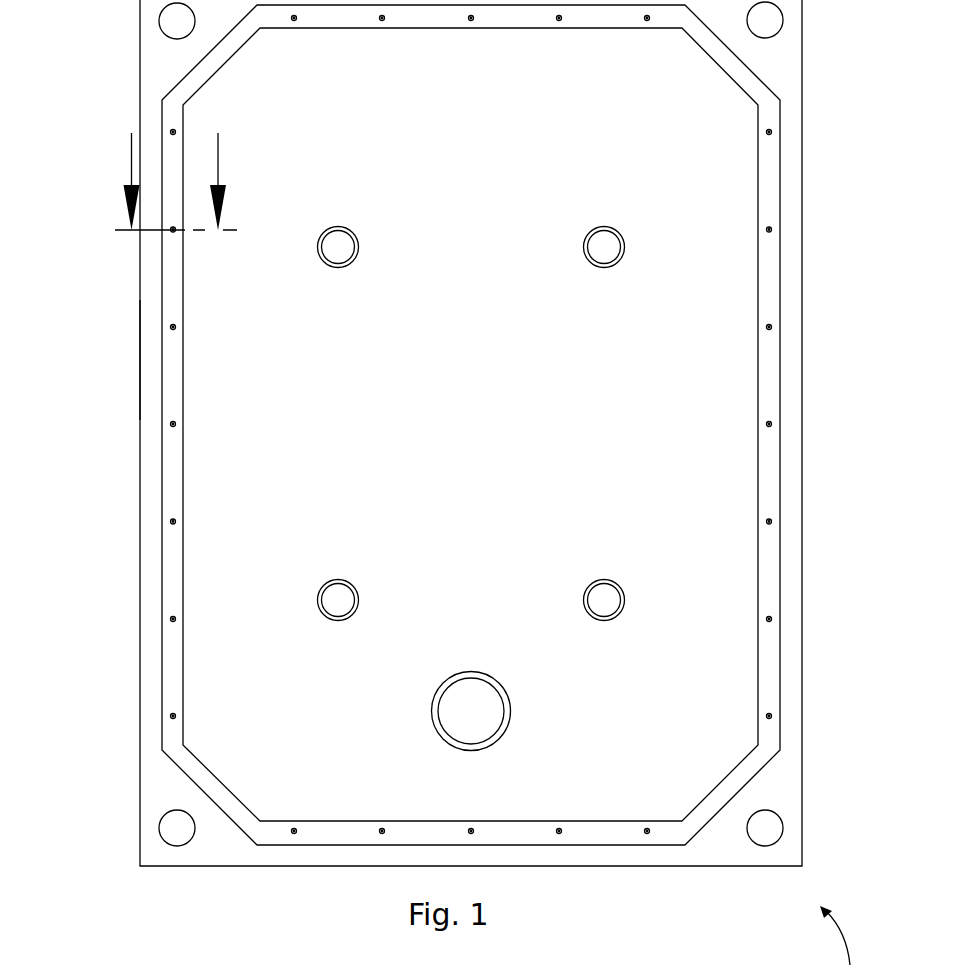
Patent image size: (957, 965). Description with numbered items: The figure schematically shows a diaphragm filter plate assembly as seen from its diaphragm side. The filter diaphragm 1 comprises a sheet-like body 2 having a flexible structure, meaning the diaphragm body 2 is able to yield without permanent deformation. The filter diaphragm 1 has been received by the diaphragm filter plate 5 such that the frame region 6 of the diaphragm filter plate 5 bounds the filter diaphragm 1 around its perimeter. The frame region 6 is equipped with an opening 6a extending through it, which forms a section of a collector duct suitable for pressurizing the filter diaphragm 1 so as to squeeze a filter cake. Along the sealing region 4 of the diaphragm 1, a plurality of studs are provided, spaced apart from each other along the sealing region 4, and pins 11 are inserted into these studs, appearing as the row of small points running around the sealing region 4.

The filter diaphragm 1 is at (460, 433).
The sheet-like body 2 is at (714, 373).
The sealing region 4 is at (175, 588).
The diaphragm filter plate 5 is at (133, 749).
The frame region 6 is at (140, 356).
The opening 6a is at (176, 21).
The pins 11 is at (775, 424).